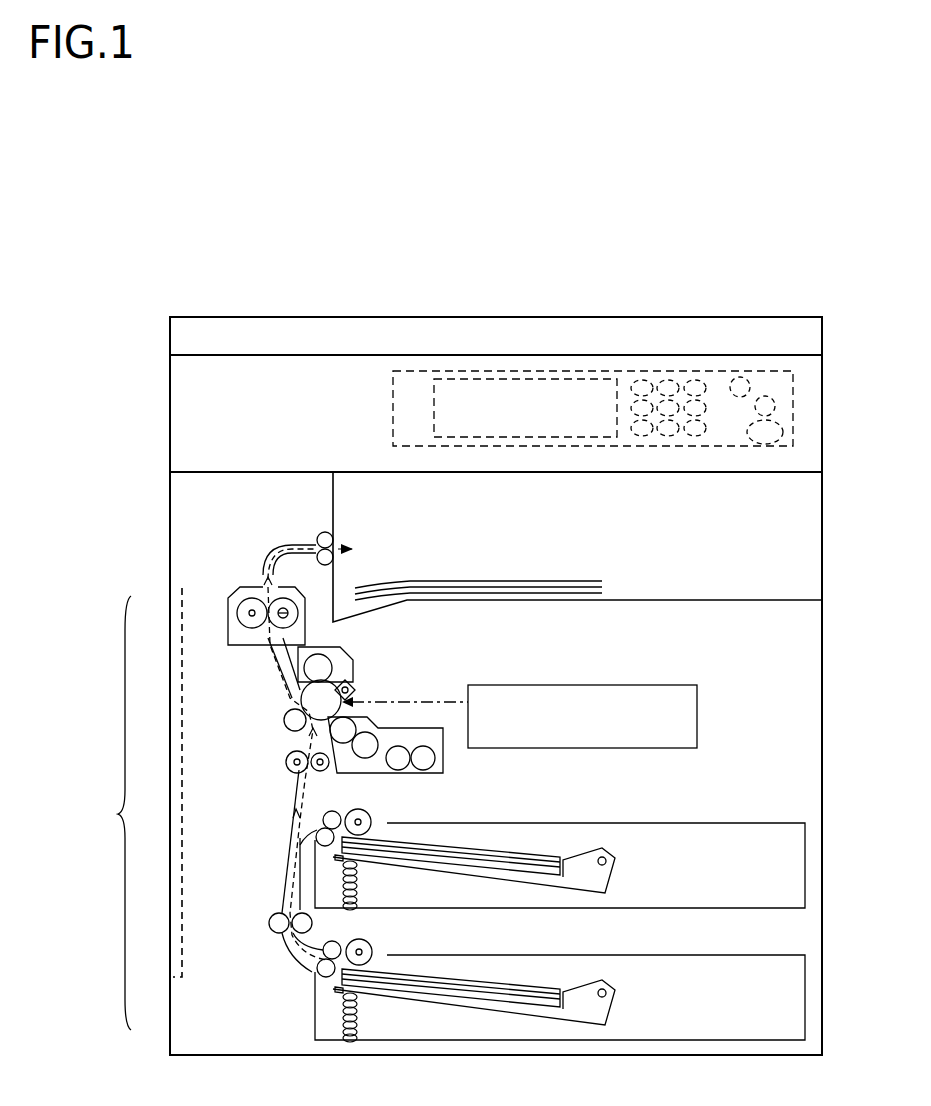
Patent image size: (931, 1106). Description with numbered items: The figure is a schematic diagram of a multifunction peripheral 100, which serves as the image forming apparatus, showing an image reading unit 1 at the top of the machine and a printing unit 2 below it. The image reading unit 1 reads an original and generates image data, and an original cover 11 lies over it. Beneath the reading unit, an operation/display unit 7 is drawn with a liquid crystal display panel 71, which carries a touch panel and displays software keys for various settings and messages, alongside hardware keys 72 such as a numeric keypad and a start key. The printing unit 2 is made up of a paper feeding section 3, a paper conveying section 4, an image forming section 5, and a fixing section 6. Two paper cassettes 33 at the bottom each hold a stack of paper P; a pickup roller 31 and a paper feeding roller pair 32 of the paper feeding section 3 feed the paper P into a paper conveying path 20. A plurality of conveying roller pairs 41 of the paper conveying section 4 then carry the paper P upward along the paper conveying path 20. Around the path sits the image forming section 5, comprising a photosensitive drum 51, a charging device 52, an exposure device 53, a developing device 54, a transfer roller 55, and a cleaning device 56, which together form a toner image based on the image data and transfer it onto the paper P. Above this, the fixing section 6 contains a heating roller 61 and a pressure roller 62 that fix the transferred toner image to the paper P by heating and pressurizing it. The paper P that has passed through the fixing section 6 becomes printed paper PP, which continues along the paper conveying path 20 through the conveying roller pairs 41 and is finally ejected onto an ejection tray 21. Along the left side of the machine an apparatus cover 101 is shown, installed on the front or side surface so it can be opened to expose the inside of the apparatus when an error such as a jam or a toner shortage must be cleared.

The multifunction peripheral 100 is at (194, 299).
The image reading unit 1 is at (168, 392).
The original cover 11 is at (493, 317).
The operation/display unit 7 is at (392, 406).
The liquid crystal display panel 71 is at (562, 438).
The hardware keys 72 is at (766, 444).
The printing unit 2 is at (113, 813).
The paper feeding section 3 is at (313, 999).
The paper conveying section 4 is at (270, 912).
The image forming section 5 is at (283, 727).
The fixing section 6 is at (228, 627).
The heating roller 61 is at (298, 613).
The pressure roller 62 is at (237, 613).
The conveying roller pairs 41 is at (320, 534).
The apparatus cover 101 is at (182, 588).
The paper conveying path 20 is at (285, 838).
The ejection tray 21 is at (648, 600).
The printed paper PP is at (455, 580).
The paper P is at (537, 850).
The pickup roller 31 is at (369, 814).
The paper feeding roller pair 32 is at (332, 811).
The paper cassette 33 is at (735, 823).
The photosensitive drum 51 is at (308, 698).
The charging device 52 is at (352, 688).
The exposure device 53 is at (570, 690).
The developing device 54 is at (443, 762).
The transfer roller 55 is at (287, 718).
The cleaning device 56 is at (340, 656).